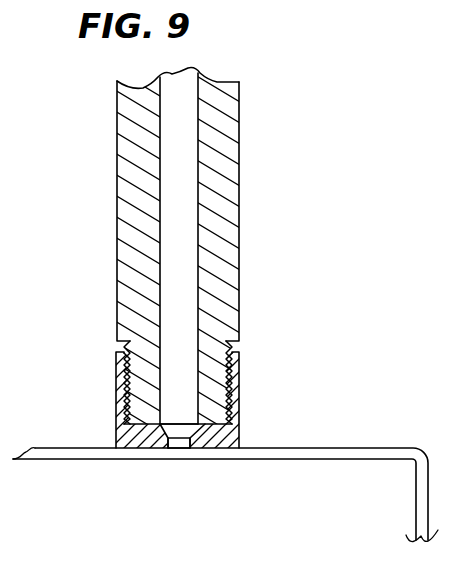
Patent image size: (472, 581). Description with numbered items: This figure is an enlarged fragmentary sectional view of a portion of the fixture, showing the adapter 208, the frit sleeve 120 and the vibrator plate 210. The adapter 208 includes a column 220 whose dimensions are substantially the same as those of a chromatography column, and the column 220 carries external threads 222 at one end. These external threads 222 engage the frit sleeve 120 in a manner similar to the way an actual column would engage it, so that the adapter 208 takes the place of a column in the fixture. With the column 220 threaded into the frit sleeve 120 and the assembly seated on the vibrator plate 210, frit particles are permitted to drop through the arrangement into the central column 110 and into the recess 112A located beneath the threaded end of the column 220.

The adapter 208 is at (223, 258).
The column 220 is at (222, 233).
The external threads 222 is at (224, 343).
The recess 112A is at (183, 421).
The frit sleeve 120 is at (240, 402).
The central column 110 is at (190, 443).
The vibrator plate 210 is at (88, 448).